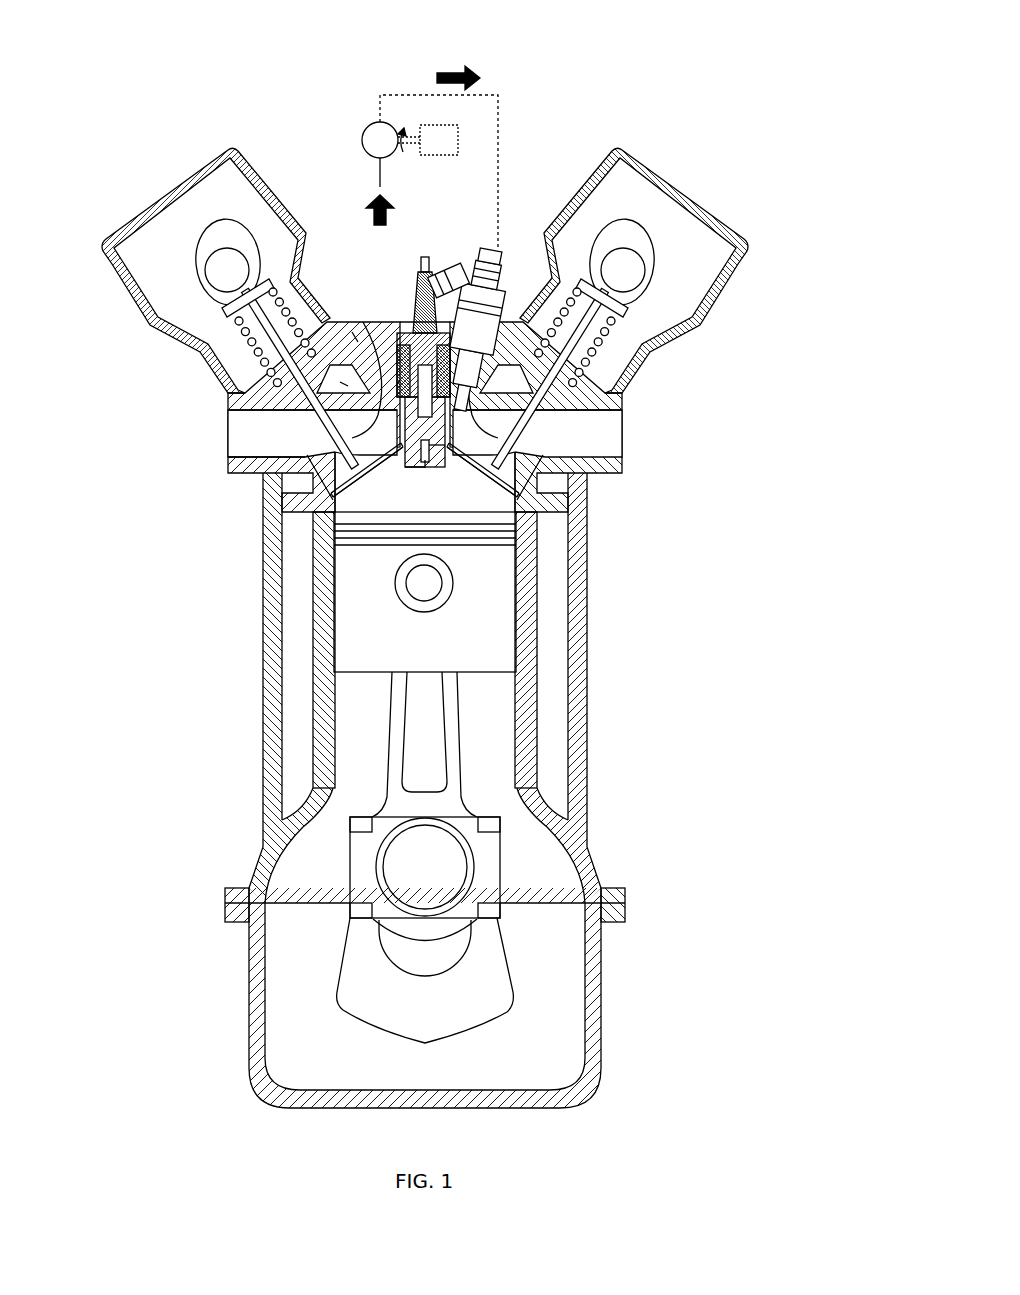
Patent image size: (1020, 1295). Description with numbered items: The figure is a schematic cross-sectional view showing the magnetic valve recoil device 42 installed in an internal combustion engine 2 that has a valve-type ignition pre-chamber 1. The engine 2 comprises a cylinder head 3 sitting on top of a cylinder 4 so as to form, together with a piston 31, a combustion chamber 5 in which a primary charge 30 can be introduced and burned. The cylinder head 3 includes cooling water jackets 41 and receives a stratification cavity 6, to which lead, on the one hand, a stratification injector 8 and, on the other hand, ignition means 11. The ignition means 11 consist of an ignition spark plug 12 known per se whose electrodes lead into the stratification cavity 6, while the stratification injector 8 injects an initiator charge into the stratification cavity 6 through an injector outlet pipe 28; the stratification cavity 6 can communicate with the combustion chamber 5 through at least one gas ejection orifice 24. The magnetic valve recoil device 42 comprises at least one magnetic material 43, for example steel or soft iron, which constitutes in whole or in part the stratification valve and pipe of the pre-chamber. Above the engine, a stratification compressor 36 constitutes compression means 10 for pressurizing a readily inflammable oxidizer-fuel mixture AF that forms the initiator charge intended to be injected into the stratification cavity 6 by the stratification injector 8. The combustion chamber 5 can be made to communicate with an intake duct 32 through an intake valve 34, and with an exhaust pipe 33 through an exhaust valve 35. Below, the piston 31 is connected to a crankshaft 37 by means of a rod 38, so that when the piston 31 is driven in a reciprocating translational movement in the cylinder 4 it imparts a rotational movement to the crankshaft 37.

The valve-type ignition pre-chamber 1 is at (340, 382).
The internal combustion engine 2 is at (161, 113).
The cylinder head 3 is at (622, 463).
The cylinder 4 is at (334, 705).
The combustion chamber 5 is at (367, 502).
The stratification cavity 6 is at (340, 438).
The stratification injector 8 is at (505, 320).
The compression means 10 is at (358, 112).
The ignition means 11 is at (410, 290).
The ignition spark plug 12 is at (424, 256).
The gas ejection orifice 24 is at (400, 460).
The injector outlet pipe 28 is at (463, 433).
The primary charge 30 is at (518, 508).
The piston 31 is at (487, 620).
The intake duct 32 is at (238, 418).
The exhaust pipe 33 is at (603, 438).
The intake valve 34 is at (325, 412).
The exhaust valve 35 is at (612, 418).
The stratification compressor 36 is at (363, 133).
The crankshaft 37 is at (477, 965).
The rod 38 is at (450, 762).
The cooling water jackets 41 is at (228, 378).
The magnetic valve recoil device 42 is at (352, 332).
The magnetic material 43 is at (437, 443).